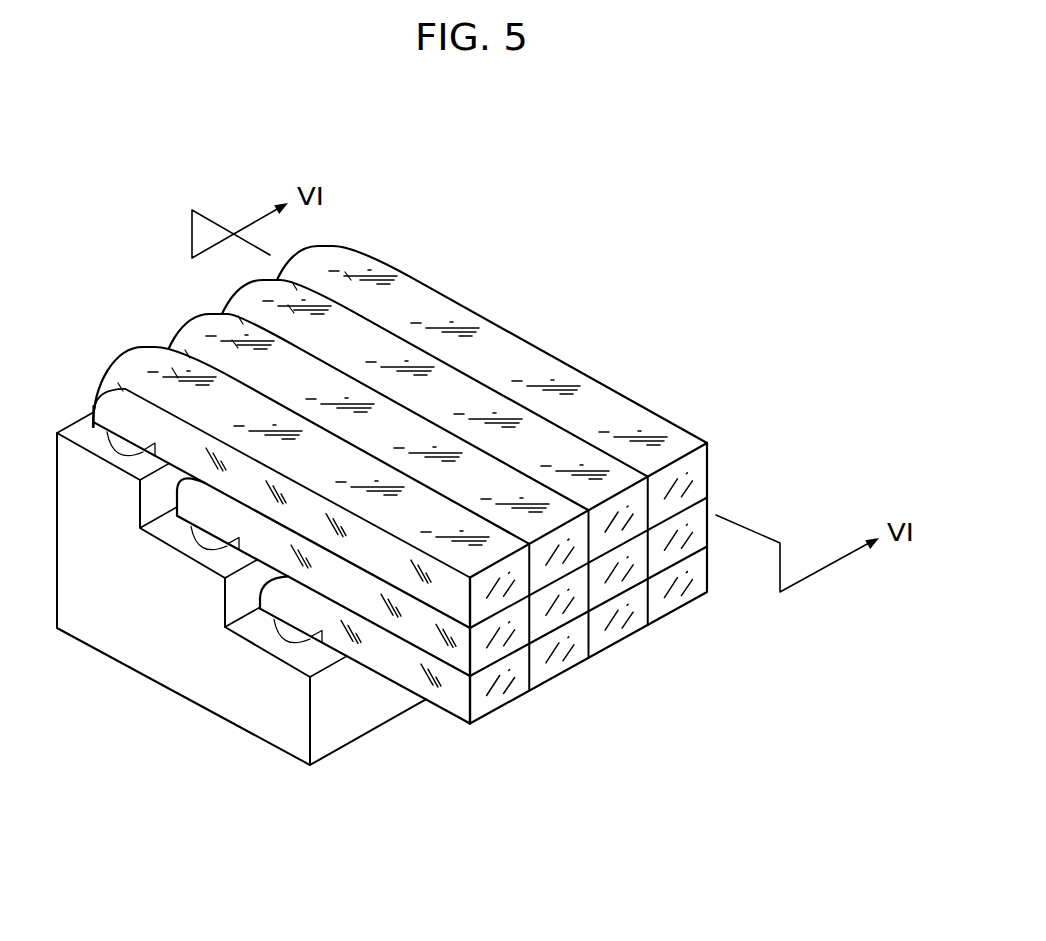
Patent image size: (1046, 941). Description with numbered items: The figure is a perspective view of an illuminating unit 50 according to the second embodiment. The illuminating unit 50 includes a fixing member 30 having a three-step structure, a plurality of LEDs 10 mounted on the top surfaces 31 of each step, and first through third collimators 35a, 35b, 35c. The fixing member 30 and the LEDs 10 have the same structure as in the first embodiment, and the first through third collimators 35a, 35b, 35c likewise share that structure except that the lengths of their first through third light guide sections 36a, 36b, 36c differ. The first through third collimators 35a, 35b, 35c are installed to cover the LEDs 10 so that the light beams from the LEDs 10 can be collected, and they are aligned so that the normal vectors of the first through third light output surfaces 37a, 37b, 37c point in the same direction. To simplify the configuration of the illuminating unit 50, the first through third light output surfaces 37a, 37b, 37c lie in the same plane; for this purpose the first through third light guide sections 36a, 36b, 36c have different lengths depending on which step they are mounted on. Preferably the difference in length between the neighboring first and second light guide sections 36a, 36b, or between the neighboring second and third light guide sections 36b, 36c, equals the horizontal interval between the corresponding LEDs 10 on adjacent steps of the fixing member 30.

The LED 10 is at (289, 641).
The fixing member 30 is at (230, 557).
The top surface of step 31 is at (85, 438).
The illuminating unit 50 is at (464, 520).
The first collimator 35a is at (547, 681).
The second collimator 35b is at (492, 627).
The third collimator 35c is at (447, 591).
The first light guide section 36a is at (458, 703).
The second light guide section 36b is at (433, 655).
The third light guide section 36c is at (403, 578).
The first light output surface 37a is at (500, 686).
The second light output surface 37b is at (513, 634).
The third light output surface 37c is at (512, 588).